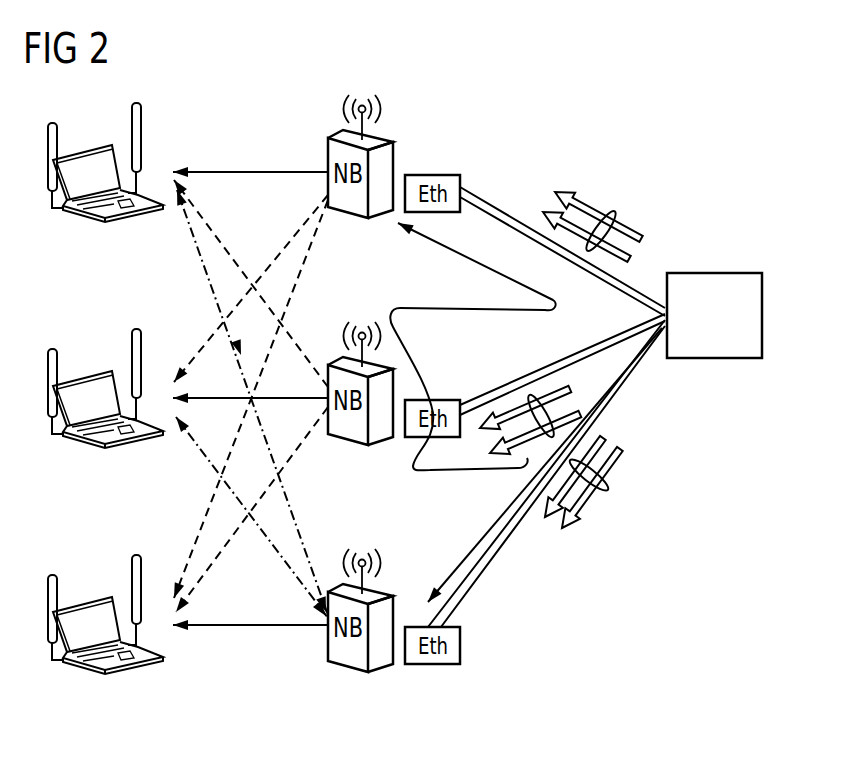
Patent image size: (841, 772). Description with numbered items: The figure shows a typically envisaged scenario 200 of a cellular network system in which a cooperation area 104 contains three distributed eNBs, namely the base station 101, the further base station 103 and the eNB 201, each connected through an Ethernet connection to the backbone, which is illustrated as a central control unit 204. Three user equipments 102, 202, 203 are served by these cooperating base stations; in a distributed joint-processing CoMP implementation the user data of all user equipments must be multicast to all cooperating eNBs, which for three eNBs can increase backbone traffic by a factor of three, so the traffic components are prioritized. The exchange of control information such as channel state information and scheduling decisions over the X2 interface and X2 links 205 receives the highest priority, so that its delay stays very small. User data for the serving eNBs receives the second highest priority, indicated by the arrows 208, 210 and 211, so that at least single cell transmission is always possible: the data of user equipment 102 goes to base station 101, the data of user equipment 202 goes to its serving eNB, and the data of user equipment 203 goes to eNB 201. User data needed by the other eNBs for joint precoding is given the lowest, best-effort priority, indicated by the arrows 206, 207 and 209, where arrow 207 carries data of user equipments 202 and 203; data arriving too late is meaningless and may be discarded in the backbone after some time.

The scenario 200 is at (686, 131).
The base station 101 is at (345, 220).
The further base station 103 is at (345, 445).
The eNB 201 is at (353, 667).
The user equipment 102 is at (82, 214).
The user equipment 202 is at (82, 440).
The user equipment 203 is at (82, 666).
The cooperation area 104 is at (240, 348).
The central control unit 204 is at (712, 272).
The X2 links 205 is at (478, 541).
The arrow 206 is at (612, 489).
The arrow 207 is at (612, 216).
The arrow 208 is at (494, 212).
The arrow 209 is at (521, 402).
The arrow 210 is at (558, 372).
The arrow 211 is at (490, 556).